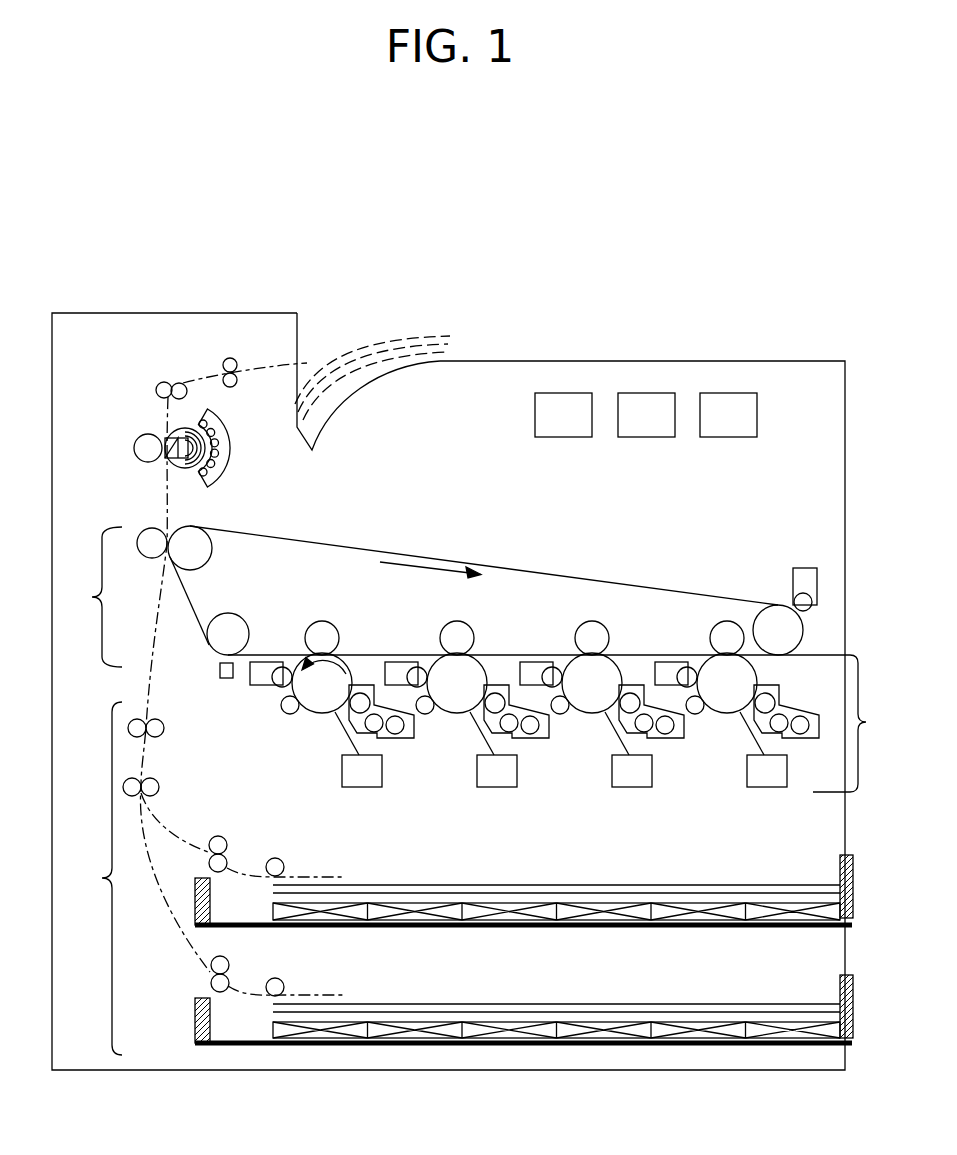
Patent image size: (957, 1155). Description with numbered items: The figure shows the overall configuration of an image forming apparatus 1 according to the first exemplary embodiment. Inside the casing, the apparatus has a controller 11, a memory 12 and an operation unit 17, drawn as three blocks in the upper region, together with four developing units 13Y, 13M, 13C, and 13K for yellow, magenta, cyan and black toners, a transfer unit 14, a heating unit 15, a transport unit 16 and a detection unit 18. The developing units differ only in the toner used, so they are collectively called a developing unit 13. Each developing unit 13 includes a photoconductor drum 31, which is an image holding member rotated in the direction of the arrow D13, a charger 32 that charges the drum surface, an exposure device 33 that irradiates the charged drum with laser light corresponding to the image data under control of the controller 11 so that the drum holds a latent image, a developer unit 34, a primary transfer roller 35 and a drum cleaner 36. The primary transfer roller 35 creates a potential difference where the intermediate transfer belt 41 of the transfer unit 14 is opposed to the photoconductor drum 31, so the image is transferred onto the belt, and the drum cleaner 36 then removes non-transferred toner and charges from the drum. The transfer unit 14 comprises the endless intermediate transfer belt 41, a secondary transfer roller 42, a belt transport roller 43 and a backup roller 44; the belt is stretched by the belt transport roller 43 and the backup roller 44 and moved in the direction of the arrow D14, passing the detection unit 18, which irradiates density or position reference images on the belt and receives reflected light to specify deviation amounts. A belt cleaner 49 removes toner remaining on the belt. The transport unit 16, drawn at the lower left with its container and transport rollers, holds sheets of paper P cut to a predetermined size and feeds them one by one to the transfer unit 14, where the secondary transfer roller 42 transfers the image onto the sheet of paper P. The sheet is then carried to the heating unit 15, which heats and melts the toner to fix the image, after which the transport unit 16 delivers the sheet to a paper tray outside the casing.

The image forming apparatus 1 is at (507, 362).
The controller 11 is at (646, 437).
The memory 12 is at (563, 437).
The operation unit 17 is at (728, 437).
The developing unit 13 is at (570, 717).
The developing unit 13K is at (330, 717).
The developing unit 13C is at (467, 733).
The developing unit 13M is at (602, 733).
The developing unit 13Y is at (737, 733).
The transfer unit 14 is at (434, 590).
The heating unit 15 is at (116, 425).
The transport unit 16 is at (152, 352).
The detection unit 18 is at (226, 678).
The photoconductor drum 31 is at (317, 712).
The charger 32 is at (289, 713).
The exposure device 33 is at (362, 787).
The developer unit 34 is at (404, 740).
The primary transfer roller 35 is at (334, 630).
The drum cleaner 36 is at (282, 668).
The intermediate transfer belt 41 is at (510, 566).
The secondary transfer roller 42 is at (143, 556).
The belt transport roller 43 is at (212, 635).
The backup roller 44 is at (204, 552).
The belt cleaner 49 is at (803, 568).
The sheet of paper P is at (738, 884).
The arrow D13 is at (323, 680).
The arrow D14 is at (430, 582).